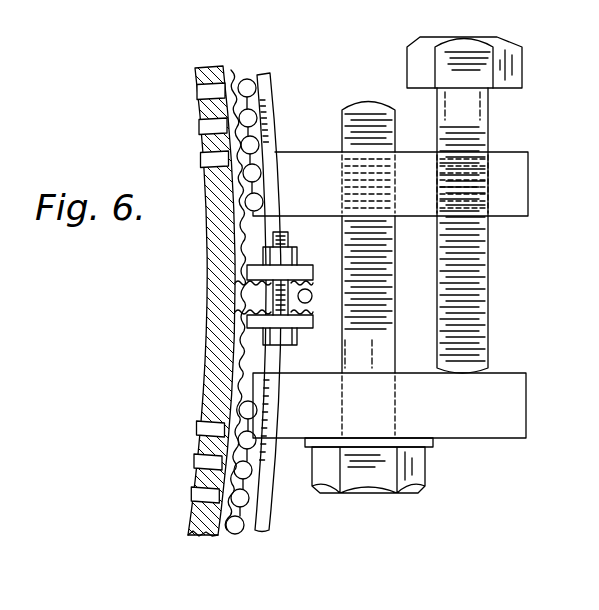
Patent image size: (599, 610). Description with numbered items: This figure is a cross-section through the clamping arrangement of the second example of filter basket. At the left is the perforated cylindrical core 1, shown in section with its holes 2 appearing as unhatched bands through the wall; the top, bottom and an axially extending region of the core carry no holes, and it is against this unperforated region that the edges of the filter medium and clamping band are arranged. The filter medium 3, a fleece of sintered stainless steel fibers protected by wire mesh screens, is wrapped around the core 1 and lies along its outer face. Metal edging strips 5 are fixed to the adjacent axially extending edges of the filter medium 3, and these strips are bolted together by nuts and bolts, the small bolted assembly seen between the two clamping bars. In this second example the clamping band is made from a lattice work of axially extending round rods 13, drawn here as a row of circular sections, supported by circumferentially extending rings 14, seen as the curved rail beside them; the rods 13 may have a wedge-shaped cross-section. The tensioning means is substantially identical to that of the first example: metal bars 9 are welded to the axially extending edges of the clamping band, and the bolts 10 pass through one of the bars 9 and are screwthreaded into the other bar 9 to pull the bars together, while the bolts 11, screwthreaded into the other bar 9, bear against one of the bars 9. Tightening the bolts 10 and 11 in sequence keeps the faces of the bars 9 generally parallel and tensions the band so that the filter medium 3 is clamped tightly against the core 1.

The perforated cylindrical core 1 is at (212, 250).
The holes 2 is at (200, 160).
The filter medium 3 is at (230, 73).
The metal edging strips 5 is at (260, 322).
The metal bars 9 is at (508, 167).
The bolts 10 is at (412, 468).
The bolts 11 is at (490, 275).
The axially extending round rods 13 is at (257, 107).
The circumferentially extending rings 14 is at (265, 477).